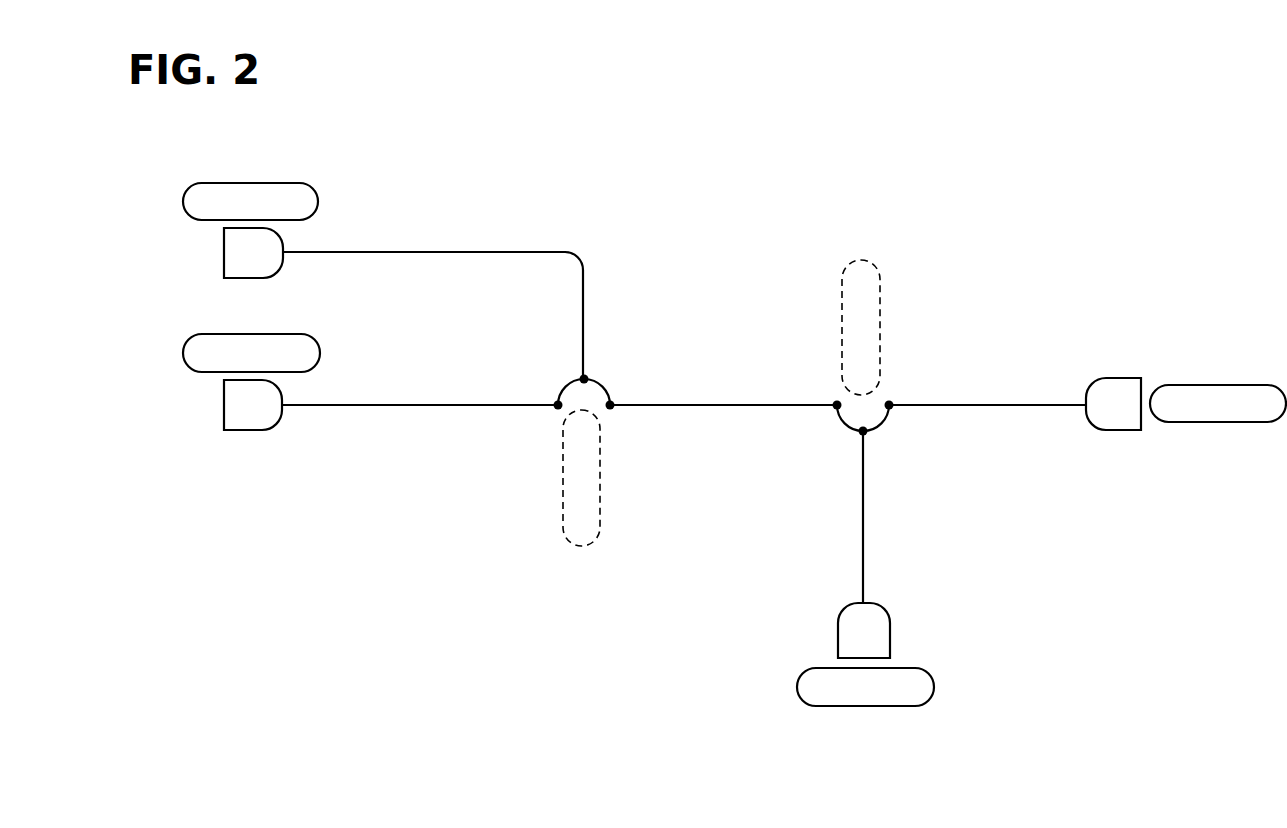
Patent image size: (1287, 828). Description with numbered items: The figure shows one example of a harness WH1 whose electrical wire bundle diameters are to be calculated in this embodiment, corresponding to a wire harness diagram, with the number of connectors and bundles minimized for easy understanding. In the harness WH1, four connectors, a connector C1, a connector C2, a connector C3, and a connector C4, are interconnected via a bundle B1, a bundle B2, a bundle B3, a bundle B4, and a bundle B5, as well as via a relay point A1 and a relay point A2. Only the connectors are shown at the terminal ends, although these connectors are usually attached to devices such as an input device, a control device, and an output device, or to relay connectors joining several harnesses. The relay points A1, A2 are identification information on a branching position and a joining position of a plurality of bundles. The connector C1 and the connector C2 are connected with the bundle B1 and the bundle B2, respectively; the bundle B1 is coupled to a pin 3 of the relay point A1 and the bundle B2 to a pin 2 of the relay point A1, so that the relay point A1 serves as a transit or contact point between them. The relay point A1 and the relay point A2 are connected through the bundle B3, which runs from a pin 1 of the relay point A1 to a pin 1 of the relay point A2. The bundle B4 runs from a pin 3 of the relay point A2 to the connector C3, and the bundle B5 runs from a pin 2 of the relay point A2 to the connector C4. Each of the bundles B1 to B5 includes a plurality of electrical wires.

The harness WH1 is at (763, 182).
The connector C1 is at (250, 230).
The connector C2 is at (251, 382).
The connector C3 is at (865, 654).
The connector C4 is at (1186, 404).
The bundle B1 is at (433, 293).
The bundle B2 is at (420, 387).
The bundle B3 is at (723, 387).
The bundle B4 is at (847, 517).
The bundle B5 is at (987, 387).
The relay point A1 is at (584, 462).
The relay point A2 is at (863, 345).
The pin 1 is at (724, 400).
The pin 2 is at (724, 400).
The pin 3 is at (724, 403).